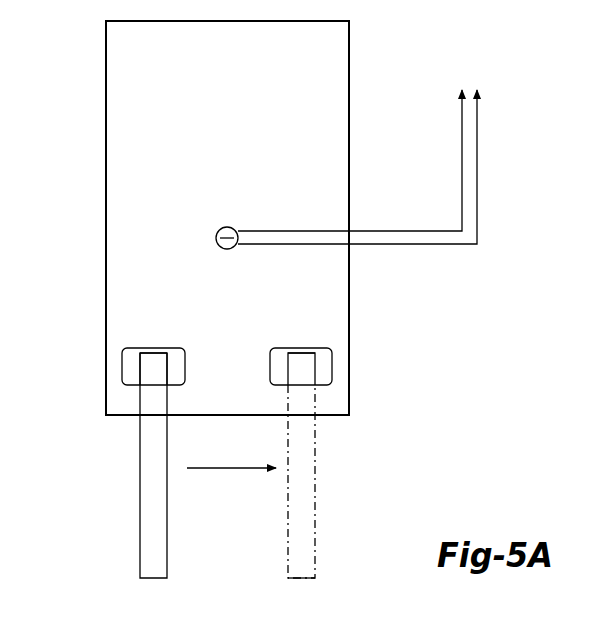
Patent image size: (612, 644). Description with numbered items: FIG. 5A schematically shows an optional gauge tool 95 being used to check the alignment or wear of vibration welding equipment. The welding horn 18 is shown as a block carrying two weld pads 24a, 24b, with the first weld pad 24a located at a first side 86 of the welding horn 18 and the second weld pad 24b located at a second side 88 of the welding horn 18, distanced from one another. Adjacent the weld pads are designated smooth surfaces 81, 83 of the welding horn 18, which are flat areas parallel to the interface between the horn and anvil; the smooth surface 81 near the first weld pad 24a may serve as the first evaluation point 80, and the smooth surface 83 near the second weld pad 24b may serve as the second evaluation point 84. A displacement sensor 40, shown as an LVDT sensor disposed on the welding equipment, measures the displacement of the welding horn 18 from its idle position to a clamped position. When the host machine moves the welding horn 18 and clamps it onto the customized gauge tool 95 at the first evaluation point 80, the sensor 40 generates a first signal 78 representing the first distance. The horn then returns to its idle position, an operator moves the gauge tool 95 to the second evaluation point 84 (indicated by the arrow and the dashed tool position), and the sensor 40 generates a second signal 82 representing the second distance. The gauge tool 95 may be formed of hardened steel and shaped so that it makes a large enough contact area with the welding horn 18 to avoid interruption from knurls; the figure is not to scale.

The welding horn 18 is at (237, 166).
The displacement sensor 40 is at (216, 238).
The first signal 78 is at (462, 143).
The second signal 82 is at (478, 143).
The first side 86 is at (105, 325).
The second side 88 is at (350, 323).
The first weld pad 24a is at (131, 371).
The second weld pad 24b is at (322, 371).
The first evaluation point 80 is at (162, 352).
The smooth surface 81 is at (150, 346).
The smooth surface 83 is at (305, 346).
The second evaluation point 84 is at (293, 352).
The gauge tool 95 is at (163, 468).